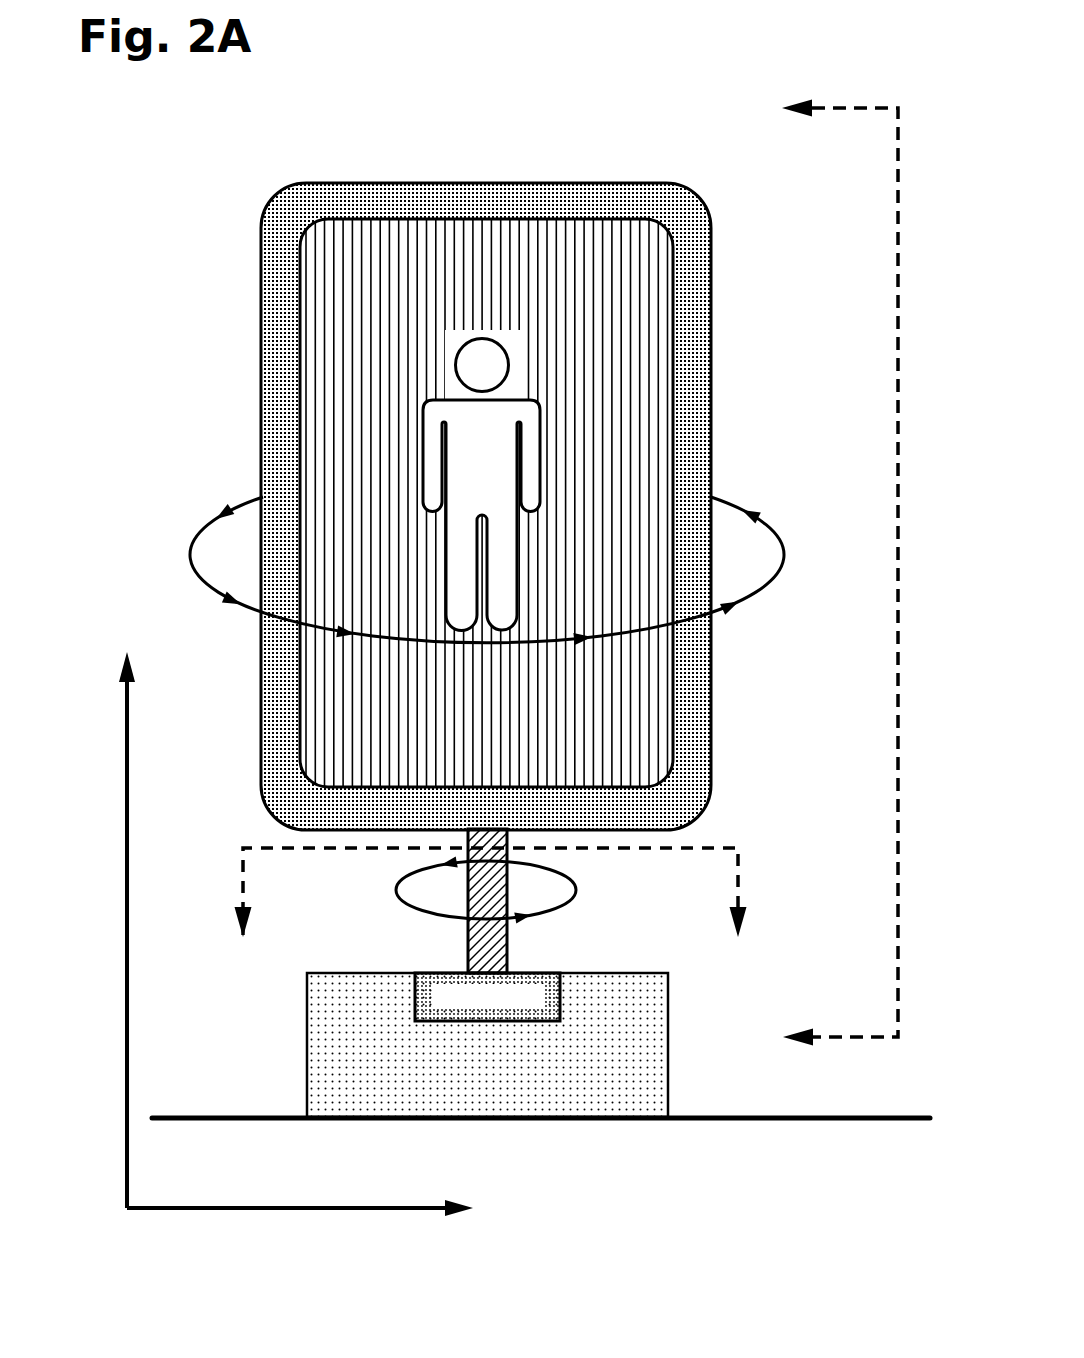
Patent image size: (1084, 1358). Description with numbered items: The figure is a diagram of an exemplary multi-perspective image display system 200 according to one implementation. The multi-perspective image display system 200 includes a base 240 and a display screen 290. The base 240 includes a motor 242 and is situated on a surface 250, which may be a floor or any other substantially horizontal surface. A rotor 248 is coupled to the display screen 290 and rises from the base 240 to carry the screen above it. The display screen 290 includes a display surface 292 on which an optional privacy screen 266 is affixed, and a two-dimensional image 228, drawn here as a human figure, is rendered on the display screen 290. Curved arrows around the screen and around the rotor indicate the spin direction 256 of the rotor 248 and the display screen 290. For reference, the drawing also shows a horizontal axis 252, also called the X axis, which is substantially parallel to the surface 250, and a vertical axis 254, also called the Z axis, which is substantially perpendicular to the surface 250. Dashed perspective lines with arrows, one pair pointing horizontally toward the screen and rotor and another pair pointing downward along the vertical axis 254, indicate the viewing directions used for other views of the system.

The multi-perspective image display system 200 is at (895, 67).
The display screen 290 is at (751, 228).
The display surface 292 is at (502, 476).
The privacy screen 266 is at (487, 503).
The two-dimensional (2D) image 228 is at (546, 368).
The spin direction 256 is at (771, 586).
The rotor 248 is at (466, 948).
The base 240 is at (608, 973).
The motor 242 is at (487, 997).
The surface 250 is at (857, 1118).
The vertical axis 254 is at (127, 848).
The horizontal axis 252 is at (292, 1207).